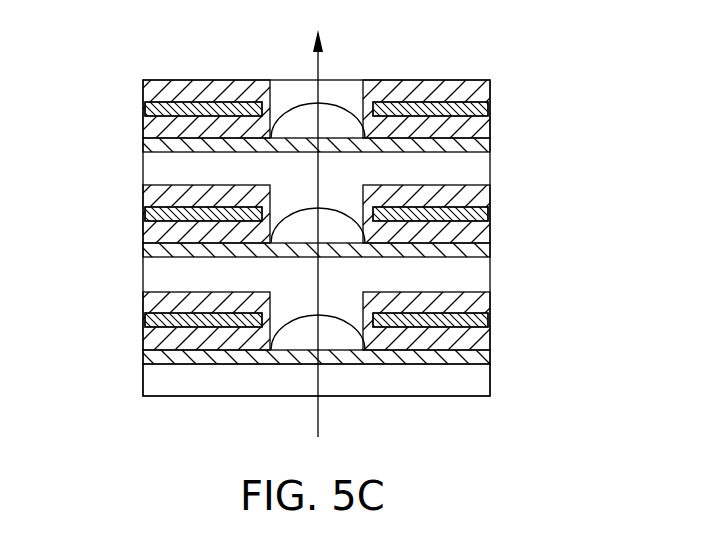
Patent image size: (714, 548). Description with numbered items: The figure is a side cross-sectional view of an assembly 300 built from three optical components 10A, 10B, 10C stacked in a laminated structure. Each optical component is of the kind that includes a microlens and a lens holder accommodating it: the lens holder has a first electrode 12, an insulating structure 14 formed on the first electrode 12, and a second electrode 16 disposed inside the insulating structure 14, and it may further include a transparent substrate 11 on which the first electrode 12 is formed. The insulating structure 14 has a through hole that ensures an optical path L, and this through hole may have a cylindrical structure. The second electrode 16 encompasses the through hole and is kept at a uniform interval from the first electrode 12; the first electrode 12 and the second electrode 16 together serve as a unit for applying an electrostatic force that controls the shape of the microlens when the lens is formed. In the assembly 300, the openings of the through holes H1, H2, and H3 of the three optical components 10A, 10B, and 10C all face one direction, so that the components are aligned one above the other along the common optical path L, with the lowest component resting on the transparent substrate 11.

The assembly 300 is at (200, 54).
The optical component 10A is at (322, 345).
The optical component 10B is at (498, 188).
The optical component 10C is at (498, 82).
The transparent substrate 11 is at (155, 388).
The first electrode 12 is at (150, 354).
The insulating structure 14 is at (152, 294).
The second electrode 16 is at (152, 319).
The through hole H1 is at (284, 88).
The through hole H2 is at (281, 197).
The through hole H3 is at (283, 314).
The optical path L is at (316, 251).